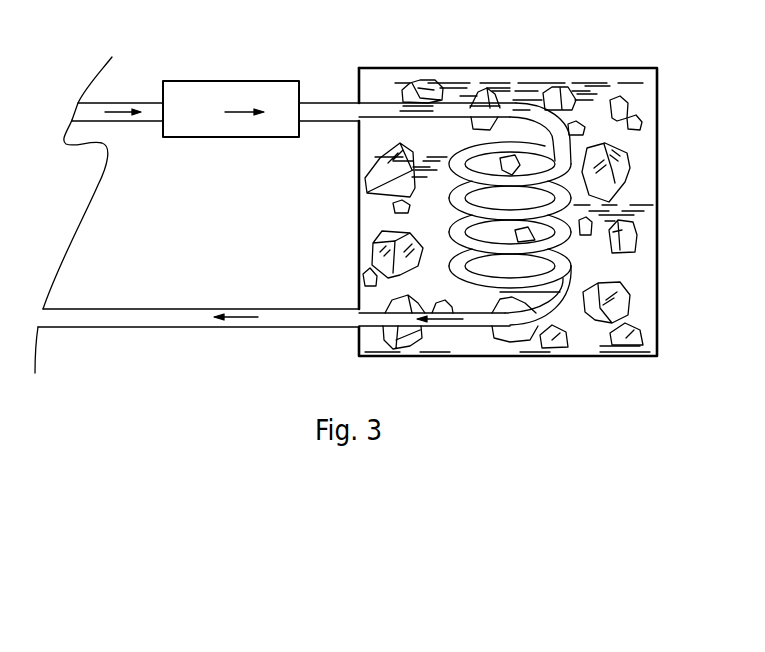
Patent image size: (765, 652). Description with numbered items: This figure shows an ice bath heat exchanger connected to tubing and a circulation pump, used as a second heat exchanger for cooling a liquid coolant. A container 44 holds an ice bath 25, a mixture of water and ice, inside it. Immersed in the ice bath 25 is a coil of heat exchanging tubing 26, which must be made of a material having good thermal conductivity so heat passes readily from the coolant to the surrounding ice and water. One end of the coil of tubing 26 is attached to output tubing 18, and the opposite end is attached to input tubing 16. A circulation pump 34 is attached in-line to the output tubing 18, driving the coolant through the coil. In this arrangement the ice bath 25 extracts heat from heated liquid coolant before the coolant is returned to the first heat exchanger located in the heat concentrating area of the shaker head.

The output tubing 18 is at (137, 103).
The circulation pump 34 is at (262, 81).
The input tubing 16 is at (230, 308).
The ice bath 25 is at (633, 172).
The coil of heat exchanging tubing 26 is at (527, 313).
The container 44 is at (623, 356).